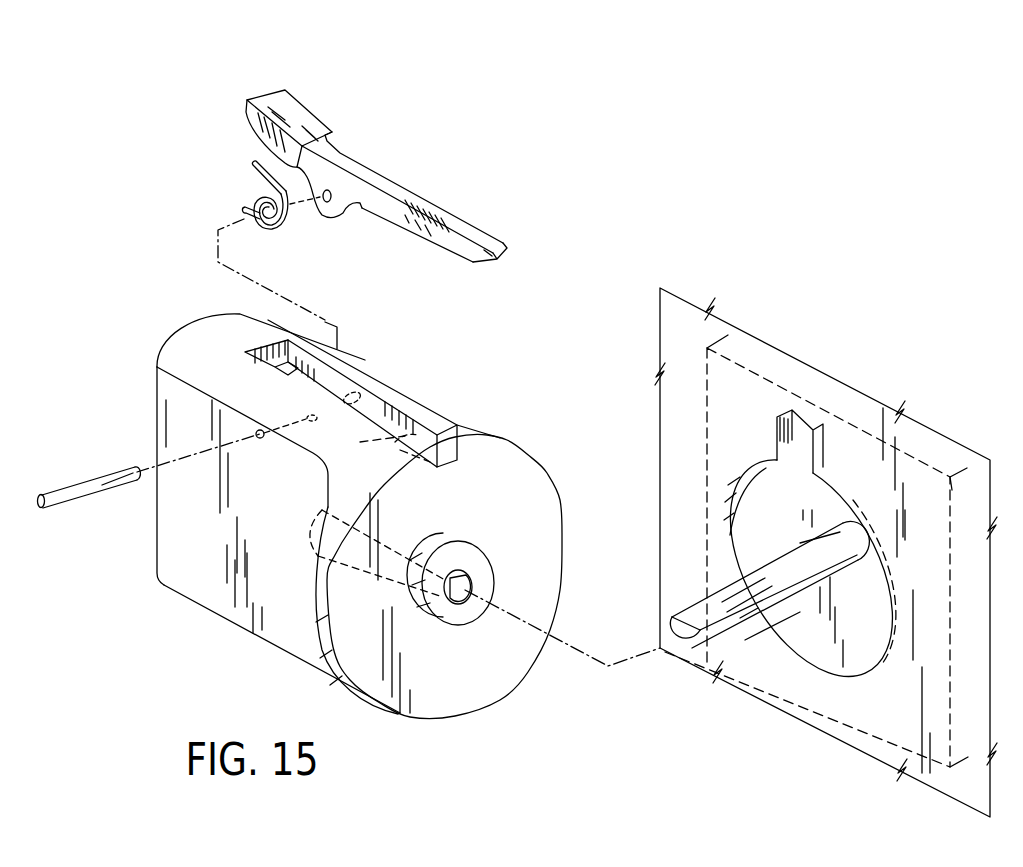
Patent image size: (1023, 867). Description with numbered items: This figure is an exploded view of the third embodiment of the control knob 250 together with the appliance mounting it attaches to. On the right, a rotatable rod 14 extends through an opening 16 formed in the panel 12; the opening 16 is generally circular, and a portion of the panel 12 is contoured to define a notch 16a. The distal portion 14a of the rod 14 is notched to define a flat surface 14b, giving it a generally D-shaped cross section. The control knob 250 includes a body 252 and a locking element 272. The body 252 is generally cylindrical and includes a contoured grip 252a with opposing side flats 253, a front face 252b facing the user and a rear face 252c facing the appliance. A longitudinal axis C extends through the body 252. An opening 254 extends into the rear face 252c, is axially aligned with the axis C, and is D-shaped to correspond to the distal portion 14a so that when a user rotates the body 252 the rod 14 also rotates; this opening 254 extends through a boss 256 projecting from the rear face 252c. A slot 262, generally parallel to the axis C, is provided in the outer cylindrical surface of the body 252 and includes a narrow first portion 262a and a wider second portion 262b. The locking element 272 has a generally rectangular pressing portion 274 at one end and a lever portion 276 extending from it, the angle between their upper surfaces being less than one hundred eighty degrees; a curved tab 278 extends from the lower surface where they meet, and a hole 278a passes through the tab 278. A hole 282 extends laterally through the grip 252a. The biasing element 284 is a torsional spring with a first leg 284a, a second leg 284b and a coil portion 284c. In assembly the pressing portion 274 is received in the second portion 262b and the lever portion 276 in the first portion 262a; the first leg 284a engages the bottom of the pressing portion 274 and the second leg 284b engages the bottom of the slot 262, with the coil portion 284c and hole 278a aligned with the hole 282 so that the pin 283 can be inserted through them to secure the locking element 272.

The panel 12 is at (948, 457).
The rotatable rod 14 is at (790, 602).
The distal portion of the rod 14a is at (742, 622).
The flat surface 14b is at (697, 612).
The opening 16 is at (723, 508).
The notch 16a is at (787, 440).
The control knob 250 is at (534, 304).
The body 252 is at (225, 614).
The contoured grip 252a is at (193, 577).
The front face 252b is at (152, 420).
The rear face 252c is at (427, 692).
The side flats 253 is at (273, 606).
The opening 254 is at (473, 580).
The boss 256 is at (450, 617).
The slot 262 is at (395, 410).
The first portion of the slot 262a is at (437, 434).
The second portion of the slot 262b is at (302, 343).
The locking element 272 is at (352, 150).
The pressing portion 274 is at (292, 107).
The lever portion 276 is at (472, 232).
The curved tab 278 is at (331, 218).
The hole 278a is at (333, 193).
The hole 282 is at (262, 440).
The pin 283 is at (92, 493).
The biasing element 284 is at (265, 239).
The first leg 284a is at (255, 163).
The second leg 284b is at (242, 212).
The coil portion 284c is at (254, 196).
The longitudinal axis C is at (610, 676).